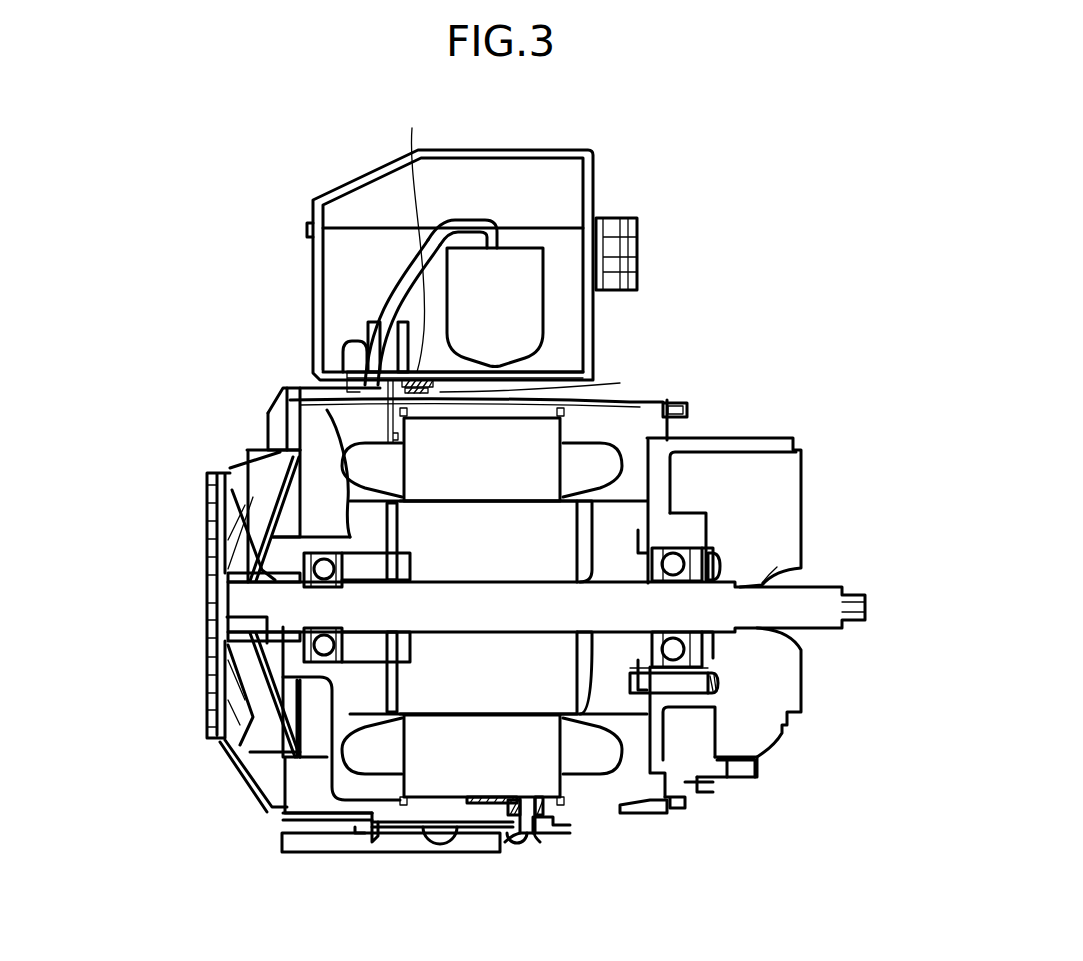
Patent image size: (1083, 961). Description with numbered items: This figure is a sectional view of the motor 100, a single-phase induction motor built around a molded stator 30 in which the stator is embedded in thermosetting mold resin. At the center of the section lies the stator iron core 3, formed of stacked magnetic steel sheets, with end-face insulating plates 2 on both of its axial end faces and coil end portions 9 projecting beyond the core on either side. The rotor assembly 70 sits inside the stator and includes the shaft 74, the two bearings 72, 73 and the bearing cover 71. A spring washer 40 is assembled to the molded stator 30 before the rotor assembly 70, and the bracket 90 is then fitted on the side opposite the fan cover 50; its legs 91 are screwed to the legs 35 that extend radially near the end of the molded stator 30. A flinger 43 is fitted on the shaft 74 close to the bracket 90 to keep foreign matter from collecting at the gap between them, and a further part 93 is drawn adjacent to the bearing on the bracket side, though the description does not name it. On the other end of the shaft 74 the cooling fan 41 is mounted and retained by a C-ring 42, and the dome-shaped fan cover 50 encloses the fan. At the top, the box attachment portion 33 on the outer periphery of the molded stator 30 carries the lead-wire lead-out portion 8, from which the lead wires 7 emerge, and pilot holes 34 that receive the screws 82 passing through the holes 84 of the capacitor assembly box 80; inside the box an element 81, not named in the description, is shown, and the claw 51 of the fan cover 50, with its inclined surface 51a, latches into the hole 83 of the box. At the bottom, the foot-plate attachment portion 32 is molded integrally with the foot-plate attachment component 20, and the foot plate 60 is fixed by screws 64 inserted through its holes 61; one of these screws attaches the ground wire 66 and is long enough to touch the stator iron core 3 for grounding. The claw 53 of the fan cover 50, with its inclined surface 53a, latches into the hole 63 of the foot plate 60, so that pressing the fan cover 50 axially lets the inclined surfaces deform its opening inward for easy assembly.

The motor 100 is at (821, 166).
The capacitor assembly box 80 is at (313, 246).
The circuit board case 81 is at (545, 303).
The screws 82 is at (408, 271).
The hole for fixing the fan cover 83 is at (350, 392).
The holes 84 is at (440, 385).
The lead wires 7 is at (507, 238).
The lead-wire lead-out portion 8 is at (370, 365).
The claw 51 is at (365, 385).
The inclined surface 51a is at (355, 372).
The coil end portions 9 is at (362, 466).
The box attachment portion 33 is at (460, 398).
The pilot holes 34 is at (445, 389).
The legs 35 is at (660, 812).
The end-face insulating plates 2 is at (403, 780).
The stator iron core 3 is at (563, 788).
The foot-plate attachment component 20 is at (475, 604).
The shaft 74 is at (850, 598).
The bearing 72 is at (685, 550).
The bearing 73 is at (322, 553).
The molded stator 30 is at (313, 777).
The spring washer 40 is at (290, 470).
The cooling fan 41 is at (246, 475).
The C-ring 42 is at (228, 580).
The fan cover 50 is at (207, 738).
The bracket 90 is at (801, 453).
The flinger 43 is at (723, 580).
The bolt 93 is at (720, 683).
The bearing cover 71 is at (700, 704).
The legs 91 is at (687, 797).
The rotor assembly 70 is at (580, 688).
The foot plate 60 is at (320, 860).
The claw 53 is at (374, 835).
The inclined surface 53a is at (385, 840).
The hole for fixing the fan cover 63 is at (357, 832).
The screws 64 is at (437, 833).
The foot-plate attachment portion 32 is at (478, 812).
The holes 61 is at (528, 838).
The ground wire 66 is at (560, 833).